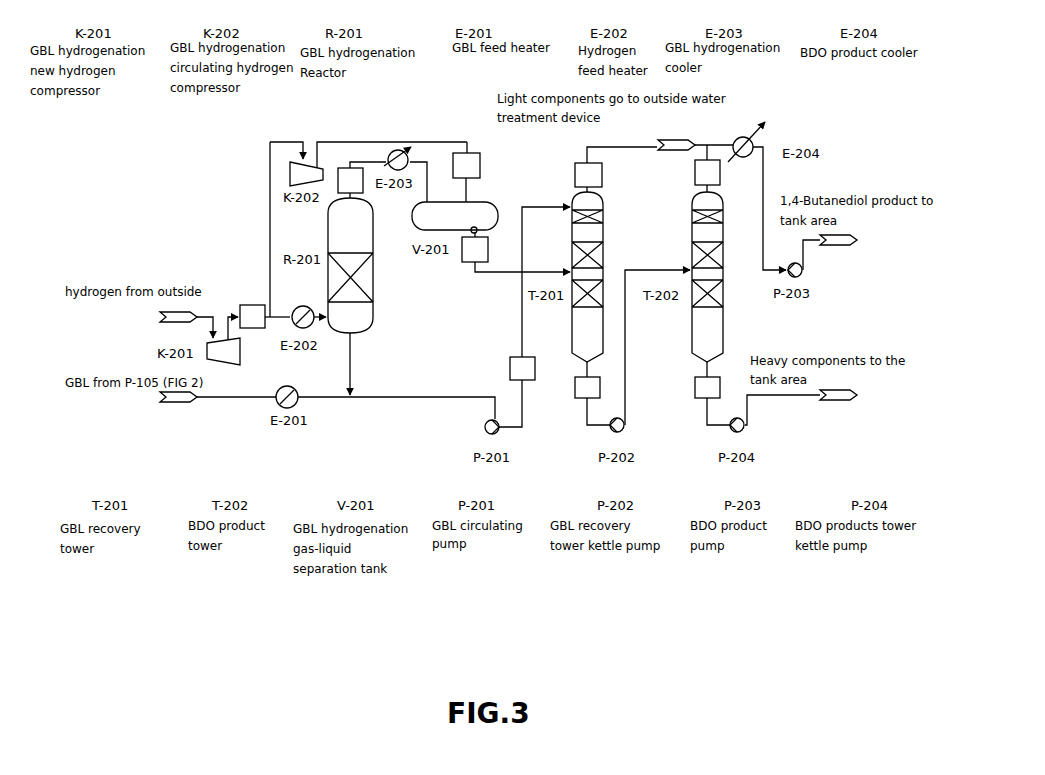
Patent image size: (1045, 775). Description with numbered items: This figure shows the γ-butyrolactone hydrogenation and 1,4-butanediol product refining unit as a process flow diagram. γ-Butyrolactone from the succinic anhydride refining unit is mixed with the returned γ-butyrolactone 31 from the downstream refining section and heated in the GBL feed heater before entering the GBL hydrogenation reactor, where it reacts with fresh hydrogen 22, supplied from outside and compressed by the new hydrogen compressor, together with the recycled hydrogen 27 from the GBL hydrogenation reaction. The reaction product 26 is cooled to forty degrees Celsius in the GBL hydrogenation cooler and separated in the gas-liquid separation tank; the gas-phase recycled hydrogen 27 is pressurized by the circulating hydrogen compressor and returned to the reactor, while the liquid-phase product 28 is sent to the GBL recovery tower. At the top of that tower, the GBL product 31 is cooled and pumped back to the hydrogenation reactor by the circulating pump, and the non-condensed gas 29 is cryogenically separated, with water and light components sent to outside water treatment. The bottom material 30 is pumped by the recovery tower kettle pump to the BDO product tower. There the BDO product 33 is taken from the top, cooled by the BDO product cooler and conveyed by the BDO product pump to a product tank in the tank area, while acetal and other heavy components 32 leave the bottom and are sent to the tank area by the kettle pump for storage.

The fresh hydrogen 22 is at (259, 322).
The reaction product 26 is at (350, 183).
The recycled hydrogen 27 is at (466, 172).
The liquid-phase product 28 is at (516, 252).
The non-condensed gas 29 is at (616, 169).
The material at the bottom of the tower 30 is at (592, 393).
The returned γ-butyrolactone 31 is at (534, 317).
The heavy components 32 is at (712, 393).
The BDO product 33 is at (714, 168).